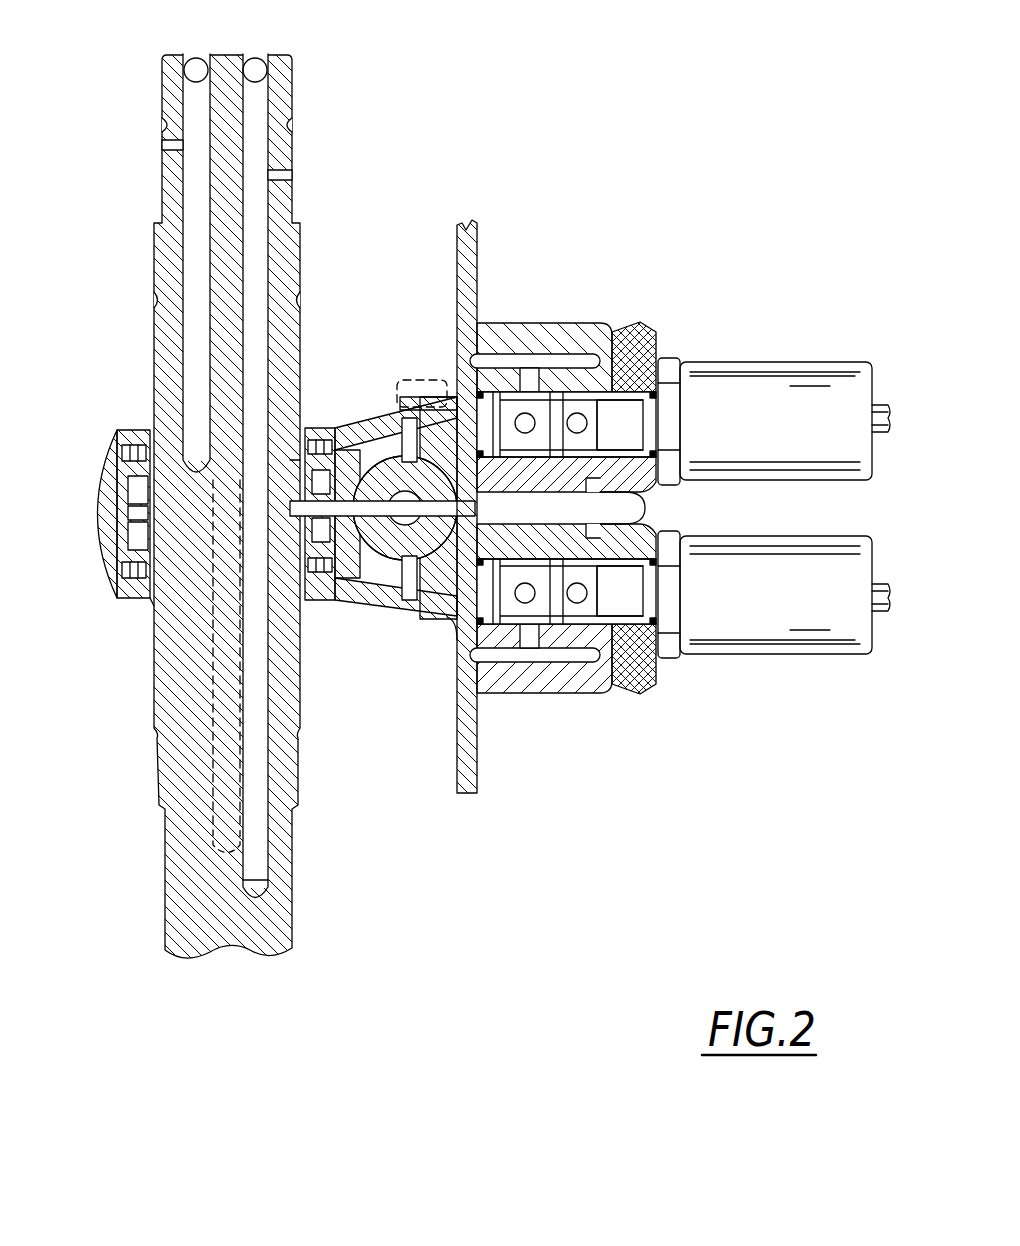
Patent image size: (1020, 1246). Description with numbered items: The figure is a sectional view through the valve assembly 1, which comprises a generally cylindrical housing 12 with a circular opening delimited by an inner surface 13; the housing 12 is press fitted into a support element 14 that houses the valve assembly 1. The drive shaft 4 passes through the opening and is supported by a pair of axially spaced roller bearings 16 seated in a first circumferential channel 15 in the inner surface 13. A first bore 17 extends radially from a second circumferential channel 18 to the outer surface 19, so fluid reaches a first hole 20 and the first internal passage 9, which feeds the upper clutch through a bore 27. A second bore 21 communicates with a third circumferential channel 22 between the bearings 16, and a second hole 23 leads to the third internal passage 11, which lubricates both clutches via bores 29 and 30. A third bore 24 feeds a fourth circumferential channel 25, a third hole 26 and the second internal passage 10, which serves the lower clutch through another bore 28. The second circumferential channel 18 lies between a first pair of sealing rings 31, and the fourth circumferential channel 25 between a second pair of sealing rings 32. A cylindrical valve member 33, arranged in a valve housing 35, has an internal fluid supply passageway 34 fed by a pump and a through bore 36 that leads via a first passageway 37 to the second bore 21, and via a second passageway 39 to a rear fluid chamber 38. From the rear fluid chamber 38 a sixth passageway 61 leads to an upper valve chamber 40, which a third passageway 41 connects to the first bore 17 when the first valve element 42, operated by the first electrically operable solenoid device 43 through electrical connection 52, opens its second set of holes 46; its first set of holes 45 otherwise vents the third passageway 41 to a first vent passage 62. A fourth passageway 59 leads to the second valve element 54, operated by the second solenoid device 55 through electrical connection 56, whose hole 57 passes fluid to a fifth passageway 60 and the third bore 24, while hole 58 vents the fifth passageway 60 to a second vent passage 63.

The valve assembly 1 is at (700, 112).
The drive shaft 4 is at (163, 781).
The first internal passage 9 is at (196, 247).
The second internal passage 10 is at (225, 700).
The third internal passage 11 is at (258, 865).
The housing 12 is at (324, 440).
The inner surface 13 is at (152, 610).
The support element 14 is at (98, 536).
The first circumferential channel 15 is at (100, 458).
The bearings 16 is at (130, 490).
The first bore 17 is at (330, 465).
The second circumferential channel 18 is at (112, 432).
The outer surface 19 is at (340, 565).
The first hole 20 is at (275, 465).
The second bore 21 is at (350, 585).
The third circumferential channel 22 is at (125, 520).
The second hole 23 is at (295, 498).
The third bore 24 is at (325, 602).
The fourth circumferential channel 25 is at (120, 578).
The third hole 26 is at (200, 635).
The bore 27 is at (170, 146).
The bore 28 is at (213, 822).
The bore 29 is at (284, 175).
The bore 30 is at (270, 882).
The first pair of sealing rings 31 is at (140, 430).
The second pair of sealing rings 32 is at (118, 556).
The valve member 33 is at (478, 665).
The internal fluid supply passageway 34 is at (398, 614).
The valve housing 35 is at (345, 442).
The through bore 36 is at (398, 395).
The first passageway 37 is at (356, 592).
The rear fluid chamber 38 is at (628, 507).
The second passageway 39 is at (497, 357).
The upper valve chamber 40 is at (590, 383).
The third passageway 41 is at (487, 263).
The first valve element 42 is at (668, 375).
The first electrically operable solenoid device 43 is at (812, 362).
The first set of holes 45 is at (560, 395).
The second set of holes 46 is at (648, 368).
The electrical connection 52 is at (875, 404).
The second valve element 54 is at (662, 690).
The second electrically operable solenoid device 55 is at (822, 656).
The electrical connection 56 is at (882, 612).
The hole 57 is at (562, 602).
The hole 58 is at (650, 690).
The fourth passageway 59 is at (600, 640).
The fifth passageway 60 is at (527, 604).
The sixth passageway 61 is at (725, 362).
The first vent passage 62 is at (528, 378).
The second vent passage 63 is at (633, 662).